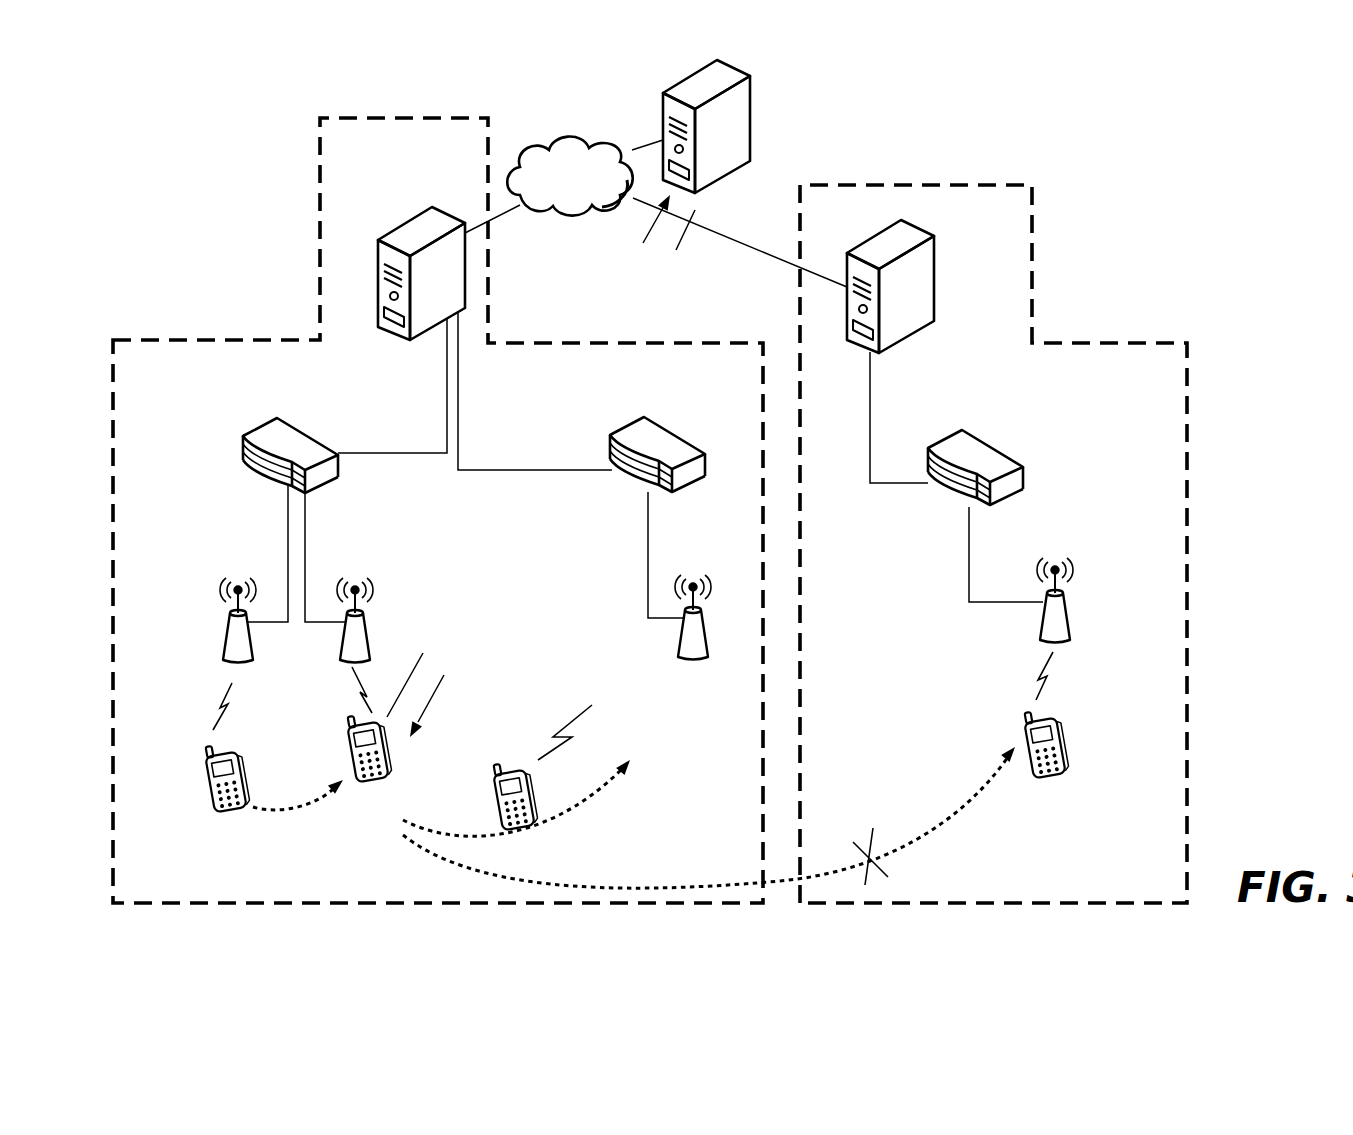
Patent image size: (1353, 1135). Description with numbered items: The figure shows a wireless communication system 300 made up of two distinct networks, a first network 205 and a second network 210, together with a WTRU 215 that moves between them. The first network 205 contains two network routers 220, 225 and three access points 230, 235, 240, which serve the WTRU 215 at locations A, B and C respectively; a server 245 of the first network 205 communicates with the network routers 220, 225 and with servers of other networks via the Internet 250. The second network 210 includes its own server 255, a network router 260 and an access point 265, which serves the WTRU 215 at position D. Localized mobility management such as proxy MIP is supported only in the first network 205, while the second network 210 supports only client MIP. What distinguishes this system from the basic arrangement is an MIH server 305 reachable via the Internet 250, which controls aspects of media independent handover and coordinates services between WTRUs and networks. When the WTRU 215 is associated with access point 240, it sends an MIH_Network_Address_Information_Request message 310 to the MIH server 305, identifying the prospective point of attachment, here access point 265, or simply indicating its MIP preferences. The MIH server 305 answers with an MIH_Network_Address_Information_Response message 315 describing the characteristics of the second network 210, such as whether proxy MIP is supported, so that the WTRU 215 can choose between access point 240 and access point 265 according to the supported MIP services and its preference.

The first network 205 is at (110, 713).
The second network 210 is at (1188, 748).
The WTRU 215 is at (208, 766).
The network router 220 is at (243, 447).
The network router 225 is at (673, 432).
The access point 230 is at (225, 640).
The access point 235 is at (340, 638).
The access point 240 is at (680, 650).
The server 245 is at (378, 247).
The Internet 250 is at (554, 140).
The server 255 is at (935, 282).
The network router 260 is at (1022, 458).
The access point 265 is at (1040, 636).
The wireless communication system 300 is at (1312, 825).
The MIH server 305 is at (748, 140).
The MIH_Network_Address_Information_Request message 310 is at (405, 682).
The MIH_Network_Address_Information_Response message 315 is at (432, 697).